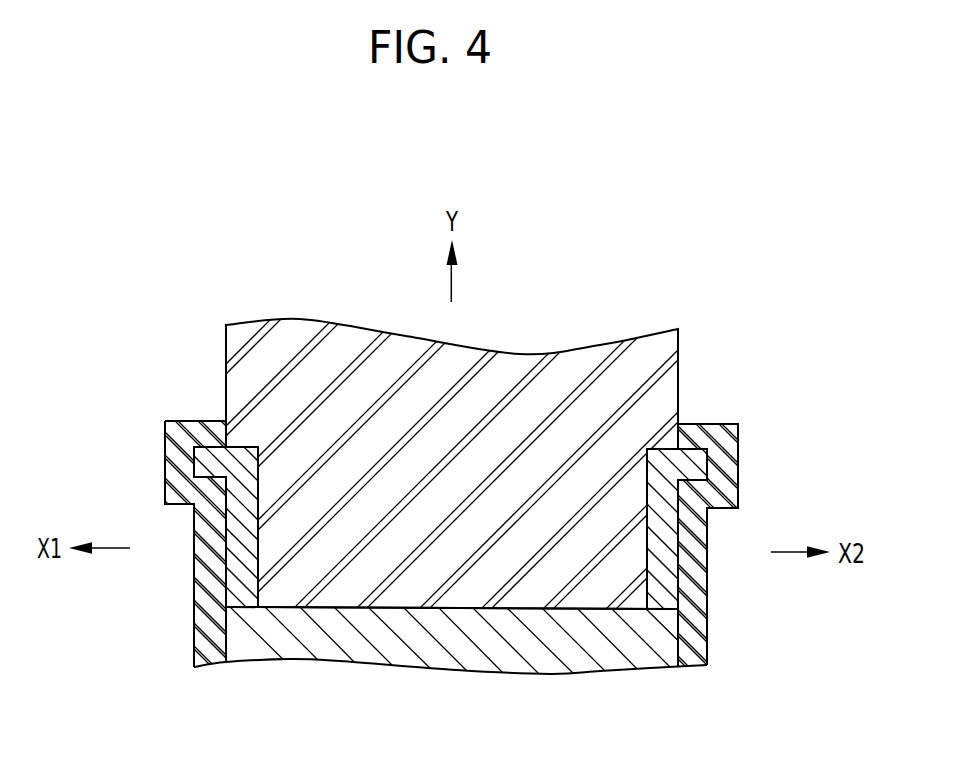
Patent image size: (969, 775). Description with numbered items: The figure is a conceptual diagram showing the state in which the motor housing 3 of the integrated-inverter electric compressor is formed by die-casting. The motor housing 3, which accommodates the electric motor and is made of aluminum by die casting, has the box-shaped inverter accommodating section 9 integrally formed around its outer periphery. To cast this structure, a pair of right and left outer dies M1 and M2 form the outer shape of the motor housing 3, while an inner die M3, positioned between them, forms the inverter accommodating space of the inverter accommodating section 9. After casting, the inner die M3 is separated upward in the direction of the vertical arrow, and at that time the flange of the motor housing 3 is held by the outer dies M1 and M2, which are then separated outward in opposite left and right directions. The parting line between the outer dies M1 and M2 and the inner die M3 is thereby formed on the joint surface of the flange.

The inner die M3 is at (570, 373).
The outer die M1 is at (195, 608).
The outer die M2 is at (706, 610).
The inverter accommodating section 9 is at (663, 513).
The motor housing 3 is at (441, 659).